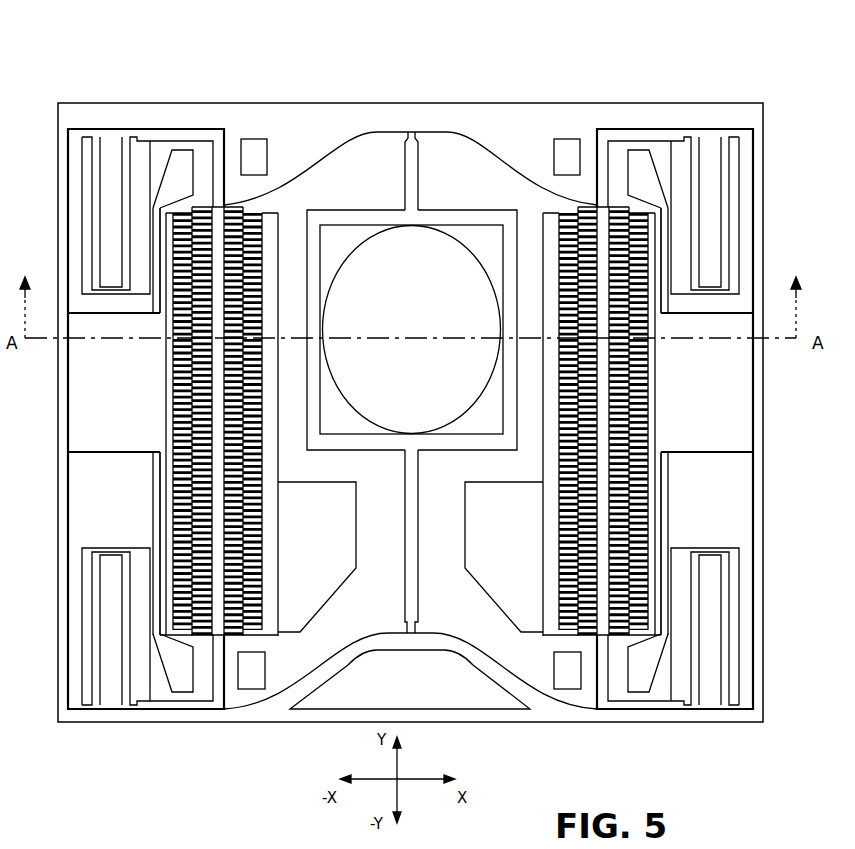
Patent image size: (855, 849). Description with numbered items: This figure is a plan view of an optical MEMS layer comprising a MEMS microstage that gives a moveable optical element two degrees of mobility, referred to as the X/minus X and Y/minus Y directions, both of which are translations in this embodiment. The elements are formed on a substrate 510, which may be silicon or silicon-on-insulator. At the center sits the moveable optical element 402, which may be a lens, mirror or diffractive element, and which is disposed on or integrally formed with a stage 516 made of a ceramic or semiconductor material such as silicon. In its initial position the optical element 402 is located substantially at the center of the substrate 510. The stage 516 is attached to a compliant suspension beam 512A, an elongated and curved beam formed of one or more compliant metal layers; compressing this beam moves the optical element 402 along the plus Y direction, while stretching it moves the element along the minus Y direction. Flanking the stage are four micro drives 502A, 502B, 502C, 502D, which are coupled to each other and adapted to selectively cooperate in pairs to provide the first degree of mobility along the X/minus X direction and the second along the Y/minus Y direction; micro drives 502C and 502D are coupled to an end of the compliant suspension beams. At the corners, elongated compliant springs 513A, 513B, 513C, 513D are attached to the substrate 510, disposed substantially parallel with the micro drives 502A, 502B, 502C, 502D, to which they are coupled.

The substrate 510 is at (532, 132).
The stage 516 is at (362, 217).
The compliant suspension beam 512A is at (410, 168).
The moveable optical element 402 is at (429, 309).
The spring 513A is at (129, 134).
The spring 513B is at (724, 134).
The spring 513C is at (726, 718).
The spring 513D is at (127, 718).
The micro drive 502A is at (543, 536).
The micro drive 502B is at (651, 391).
The micro drive 502C is at (278, 513).
The micro drive 502D is at (170, 391).